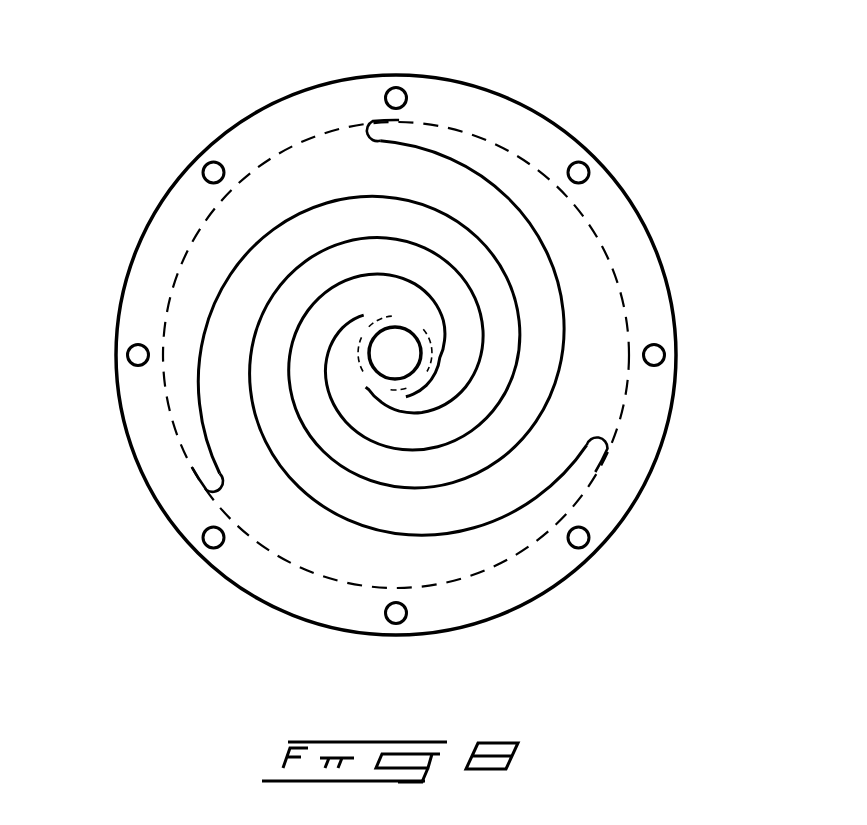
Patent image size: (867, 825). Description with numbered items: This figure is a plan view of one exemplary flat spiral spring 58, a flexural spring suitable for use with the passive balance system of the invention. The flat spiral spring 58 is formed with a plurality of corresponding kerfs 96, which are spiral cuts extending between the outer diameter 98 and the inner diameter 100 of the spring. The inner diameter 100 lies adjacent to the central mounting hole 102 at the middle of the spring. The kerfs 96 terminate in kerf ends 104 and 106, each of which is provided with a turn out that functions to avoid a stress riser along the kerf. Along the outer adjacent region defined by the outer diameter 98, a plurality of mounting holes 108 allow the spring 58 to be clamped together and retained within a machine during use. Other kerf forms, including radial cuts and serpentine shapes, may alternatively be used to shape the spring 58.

The flat spiral spring 58 is at (603, 90).
The kerfs 96 is at (560, 302).
The outer diameter 98 is at (350, 126).
The inner diameter 100 is at (433, 299).
The central mounting hole 102 is at (381, 389).
The kerf end 104 is at (214, 481).
The kerf end 106 is at (353, 318).
The mounting holes 108 is at (206, 546).